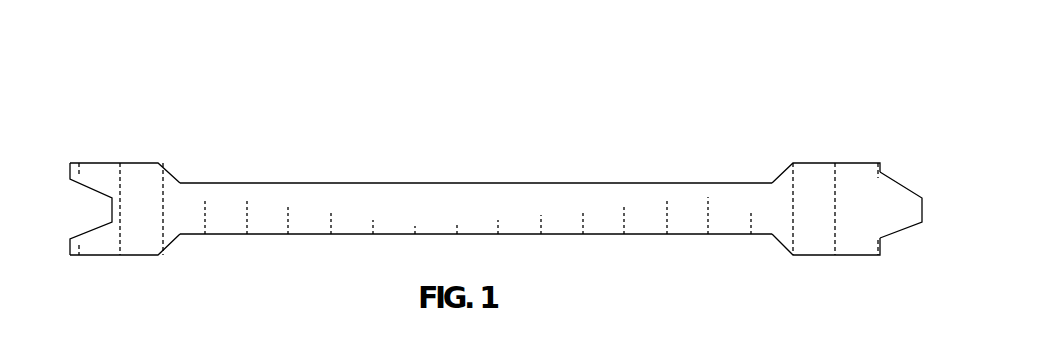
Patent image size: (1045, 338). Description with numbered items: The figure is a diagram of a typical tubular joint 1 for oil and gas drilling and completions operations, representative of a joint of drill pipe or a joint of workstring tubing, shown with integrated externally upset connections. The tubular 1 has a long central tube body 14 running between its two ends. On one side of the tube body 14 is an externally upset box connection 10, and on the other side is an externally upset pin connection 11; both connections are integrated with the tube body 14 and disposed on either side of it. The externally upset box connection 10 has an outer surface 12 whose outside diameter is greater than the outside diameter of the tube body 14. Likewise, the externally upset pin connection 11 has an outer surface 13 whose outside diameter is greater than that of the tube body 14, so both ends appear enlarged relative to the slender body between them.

The tubular joint 1 is at (112, 72).
The externally upset box connection 10 is at (93, 227).
The externally upset pin connection 11 is at (893, 237).
The outer surface 12 is at (116, 163).
The outer surface 13 is at (820, 163).
The tube body 14 is at (424, 183).